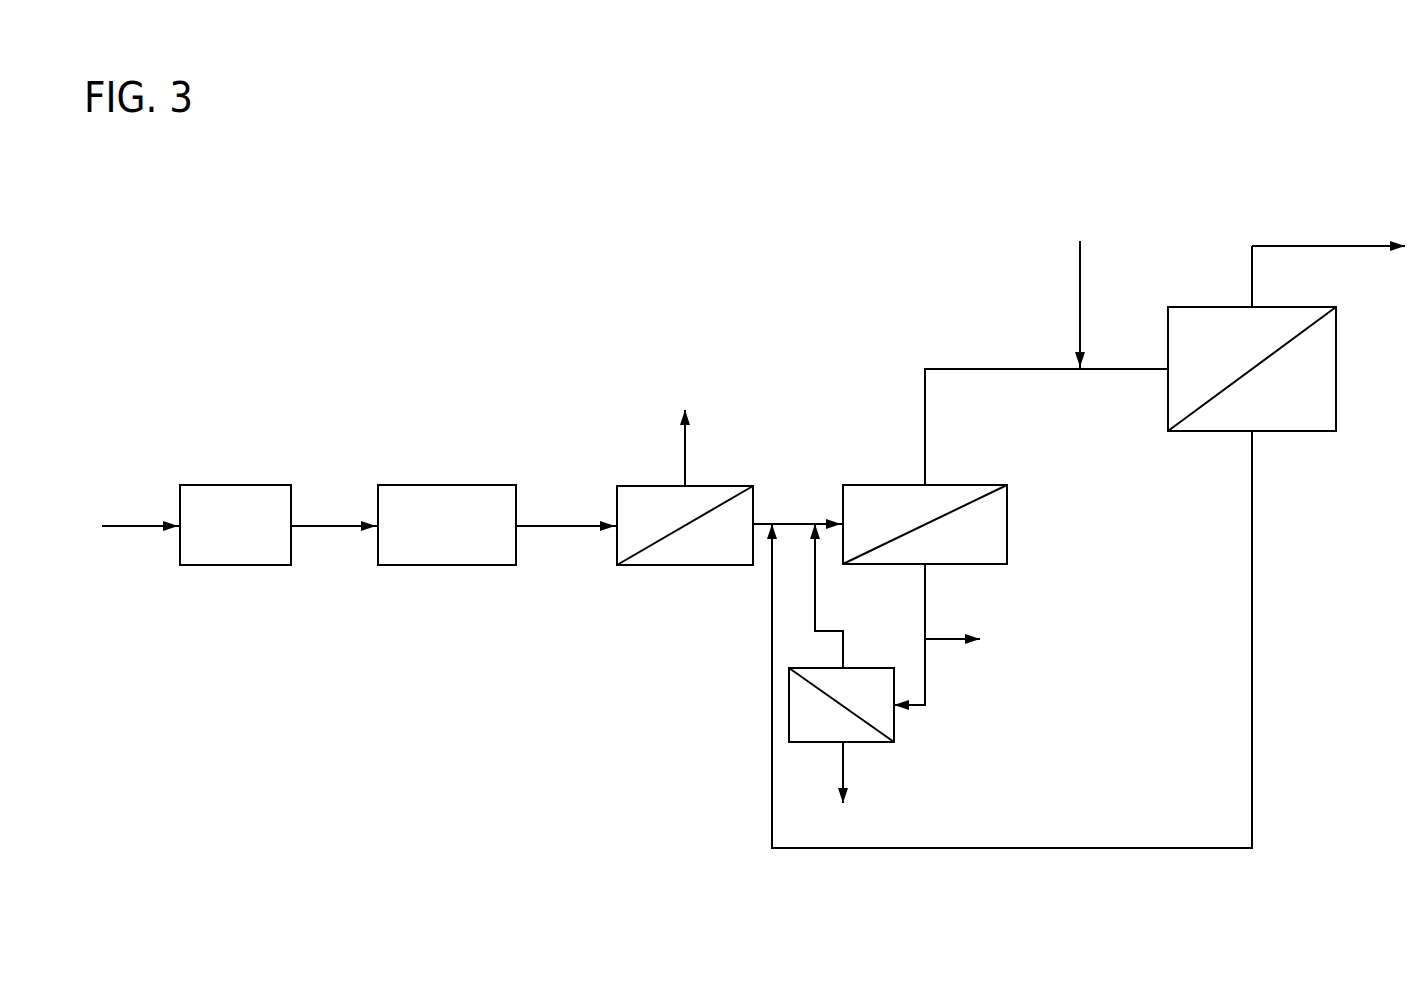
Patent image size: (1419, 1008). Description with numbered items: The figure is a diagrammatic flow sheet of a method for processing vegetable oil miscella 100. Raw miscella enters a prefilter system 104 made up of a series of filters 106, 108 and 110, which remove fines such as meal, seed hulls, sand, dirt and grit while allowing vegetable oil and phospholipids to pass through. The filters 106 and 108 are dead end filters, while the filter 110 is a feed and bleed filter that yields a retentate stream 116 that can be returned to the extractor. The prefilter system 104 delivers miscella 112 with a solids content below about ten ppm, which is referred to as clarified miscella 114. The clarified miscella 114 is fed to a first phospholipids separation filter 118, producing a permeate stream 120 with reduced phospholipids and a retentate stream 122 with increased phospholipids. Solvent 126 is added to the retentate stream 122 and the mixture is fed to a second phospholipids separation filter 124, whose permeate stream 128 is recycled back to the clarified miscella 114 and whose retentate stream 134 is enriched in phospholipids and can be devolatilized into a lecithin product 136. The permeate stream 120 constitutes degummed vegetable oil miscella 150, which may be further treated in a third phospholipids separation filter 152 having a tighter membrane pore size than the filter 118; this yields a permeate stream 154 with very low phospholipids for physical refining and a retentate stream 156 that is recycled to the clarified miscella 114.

The method for processing vegetable oil miscella 100 is at (579, 341).
The prefilter system 104 is at (357, 438).
The filter 106 is at (225, 565).
The filter 108 is at (443, 565).
The filter 110 is at (699, 565).
The miscella 112 is at (758, 526).
The clarified miscella 114 is at (764, 522).
The retentate stream 116 is at (686, 470).
The first phospholipids separation filter 118 is at (1007, 523).
The permeate stream 120 is at (927, 613).
The retentate stream 122 is at (925, 452).
The second phospholipids separation filter 124 is at (1336, 387).
The solvent 126 is at (1078, 322).
The permeate stream 128 is at (1252, 724).
The retentate stream 134 is at (1252, 281).
The lecithin product 136 is at (1330, 243).
The degummed vegetable oil miscella 150 is at (943, 643).
The third phospholipids separation filter 152 is at (860, 668).
The permeate stream 154 is at (843, 762).
The retentate stream 156 is at (816, 613).